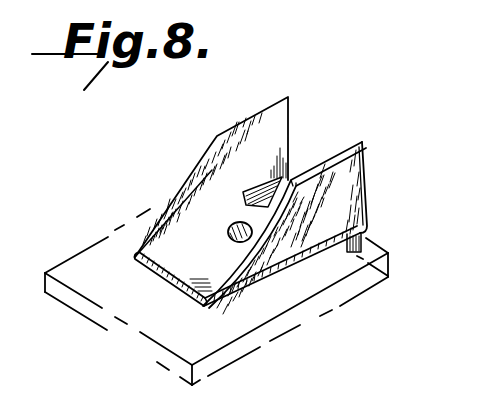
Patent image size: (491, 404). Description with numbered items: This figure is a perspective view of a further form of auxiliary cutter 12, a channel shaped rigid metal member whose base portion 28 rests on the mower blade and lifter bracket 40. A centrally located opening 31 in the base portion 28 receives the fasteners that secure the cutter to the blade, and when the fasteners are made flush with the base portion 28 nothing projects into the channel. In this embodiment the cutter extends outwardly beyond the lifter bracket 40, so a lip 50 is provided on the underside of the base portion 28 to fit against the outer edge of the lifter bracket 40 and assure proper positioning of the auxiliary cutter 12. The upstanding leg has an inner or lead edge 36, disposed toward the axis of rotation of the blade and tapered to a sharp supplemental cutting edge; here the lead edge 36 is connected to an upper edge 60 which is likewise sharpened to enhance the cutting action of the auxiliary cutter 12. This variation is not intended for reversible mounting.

The auxiliary cutter 12 is at (366, 168).
The base portion 28 is at (188, 262).
The centrally located opening 31 is at (231, 229).
The inner or lead edge 36 is at (270, 210).
The lifter bracket 40 is at (297, 331).
The lip 50 is at (362, 238).
The upper edge 60 is at (249, 118).